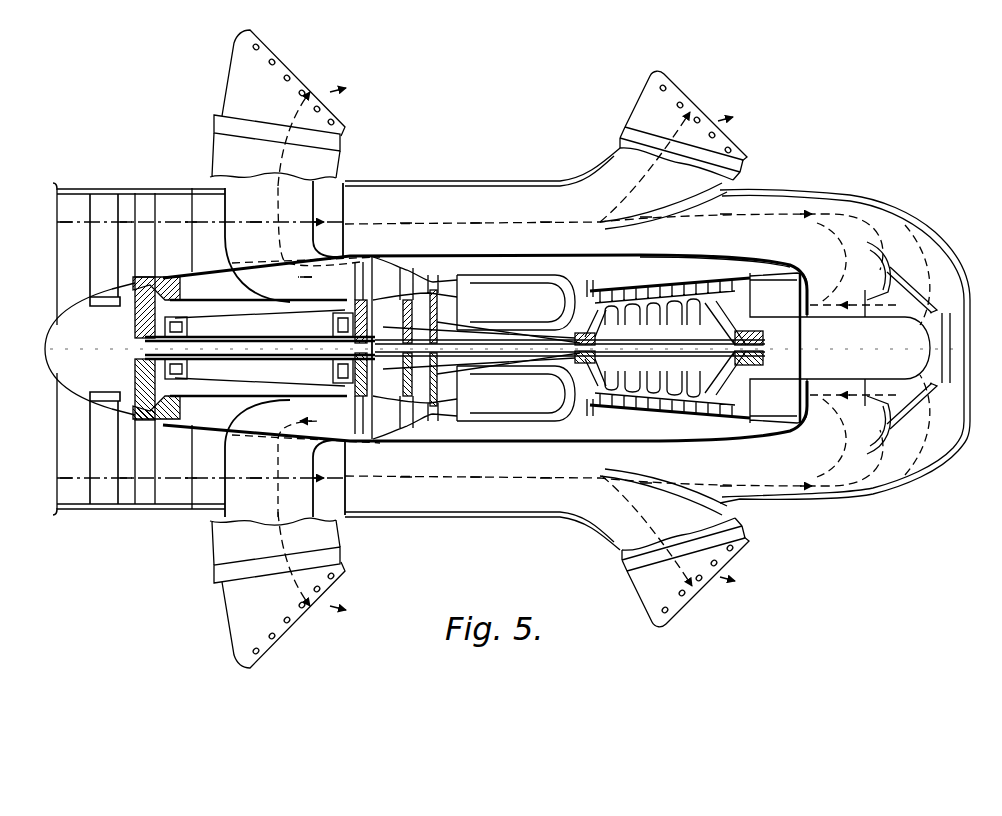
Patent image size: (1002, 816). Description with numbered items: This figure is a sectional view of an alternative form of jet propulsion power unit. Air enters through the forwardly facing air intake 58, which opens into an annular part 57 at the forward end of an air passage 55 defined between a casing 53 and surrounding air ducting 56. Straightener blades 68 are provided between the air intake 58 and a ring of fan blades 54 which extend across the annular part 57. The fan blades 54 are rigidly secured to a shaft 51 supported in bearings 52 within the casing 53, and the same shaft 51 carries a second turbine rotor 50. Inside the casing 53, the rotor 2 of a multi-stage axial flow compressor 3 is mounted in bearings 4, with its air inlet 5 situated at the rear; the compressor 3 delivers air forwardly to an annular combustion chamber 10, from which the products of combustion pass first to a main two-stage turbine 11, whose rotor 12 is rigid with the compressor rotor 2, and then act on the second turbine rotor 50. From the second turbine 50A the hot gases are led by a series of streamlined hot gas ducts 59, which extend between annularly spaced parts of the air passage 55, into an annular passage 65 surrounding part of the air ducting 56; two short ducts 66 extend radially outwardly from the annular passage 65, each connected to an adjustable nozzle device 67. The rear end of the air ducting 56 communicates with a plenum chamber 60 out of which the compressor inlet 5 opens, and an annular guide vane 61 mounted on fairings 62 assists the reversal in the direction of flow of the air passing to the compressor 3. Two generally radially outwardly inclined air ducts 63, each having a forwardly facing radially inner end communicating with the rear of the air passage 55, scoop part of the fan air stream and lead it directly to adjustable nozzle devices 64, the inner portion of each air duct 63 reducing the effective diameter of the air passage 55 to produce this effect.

The rotor 2 is at (657, 322).
The multi-stage axial flow compressor 3 is at (705, 276).
The bearings 4 is at (592, 338).
The air inlet 5 is at (806, 292).
The annular combustion chamber 10 is at (540, 288).
The main two-stage turbine 11 is at (424, 268).
The rotor 12 is at (398, 427).
The second turbine rotor 50 is at (356, 440).
The second turbine 50A is at (348, 270).
The shaft 51 is at (273, 337).
The bearings 52 is at (210, 330).
The casing 53 is at (531, 256).
The fan blades 54 is at (146, 200).
The air passage 55 is at (483, 191).
The air ducting 56 is at (428, 183).
The annular part 57 is at (170, 506).
The air intake 58 is at (55, 510).
The hot gas ducts 59 is at (253, 192).
The plenum chamber 60 is at (947, 258).
The annular guide vane 61 is at (873, 240).
The fairings 62 is at (923, 295).
The air ducts 63 is at (710, 183).
The adjustable nozzle devices 64 is at (665, 105).
The annular passage 65 is at (330, 178).
The short ducts 66 is at (255, 148).
The adjustable nozzle device 67 is at (282, 91).
The straightener blades 68 is at (100, 198).